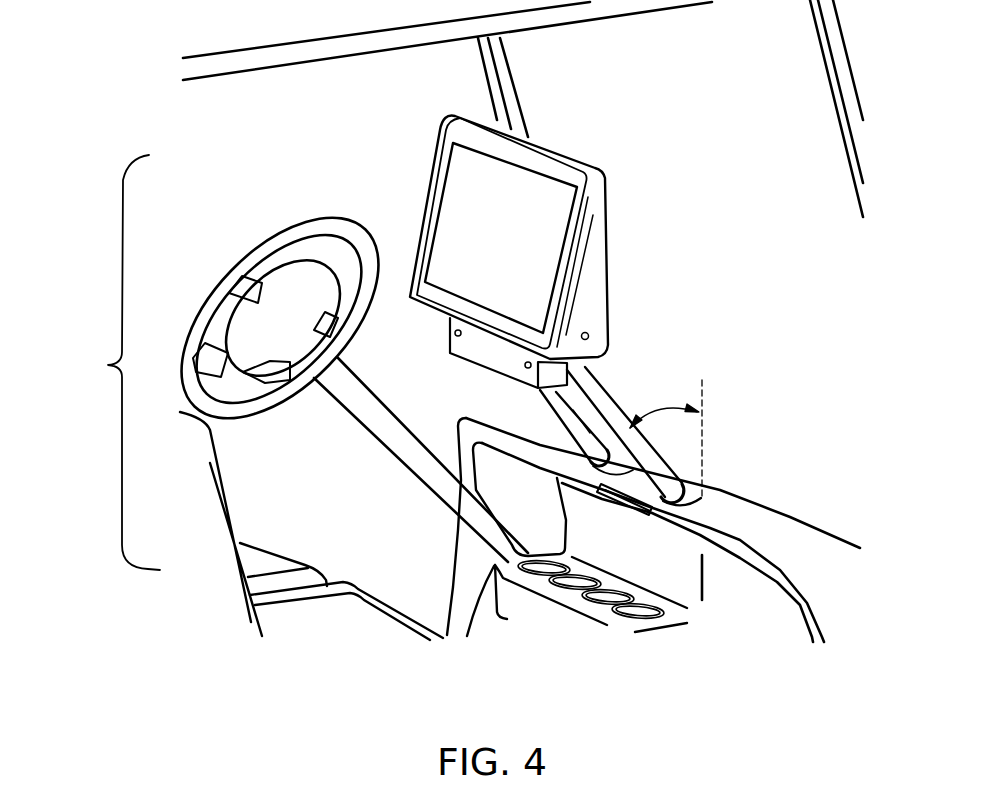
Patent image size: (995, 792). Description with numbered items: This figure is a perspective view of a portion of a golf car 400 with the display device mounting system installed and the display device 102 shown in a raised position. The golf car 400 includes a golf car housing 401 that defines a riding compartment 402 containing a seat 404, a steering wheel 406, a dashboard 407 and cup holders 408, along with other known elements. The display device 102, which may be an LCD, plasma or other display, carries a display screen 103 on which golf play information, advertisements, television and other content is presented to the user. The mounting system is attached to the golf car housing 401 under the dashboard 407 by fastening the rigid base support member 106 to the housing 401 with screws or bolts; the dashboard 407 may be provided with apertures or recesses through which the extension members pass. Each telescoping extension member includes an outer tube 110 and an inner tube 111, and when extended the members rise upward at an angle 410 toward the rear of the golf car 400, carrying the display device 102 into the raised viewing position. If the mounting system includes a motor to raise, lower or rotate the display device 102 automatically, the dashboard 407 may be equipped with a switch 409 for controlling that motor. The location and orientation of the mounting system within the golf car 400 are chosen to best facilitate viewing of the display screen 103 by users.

The golf car 400 is at (323, 122).
The display device 102 is at (602, 293).
The display screen 103 is at (452, 210).
The support member 106 is at (457, 348).
The outer tube 110 is at (684, 489).
The inner tube 111 is at (575, 395).
The golf car housing 401 is at (787, 518).
The riding compartment 402 is at (244, 397).
The seat 404 is at (277, 565).
The steering wheel 406 is at (252, 260).
The dashboard 407 is at (457, 428).
The cup holders 408 is at (542, 617).
The switch 409 is at (642, 505).
The angle 410 is at (661, 406).